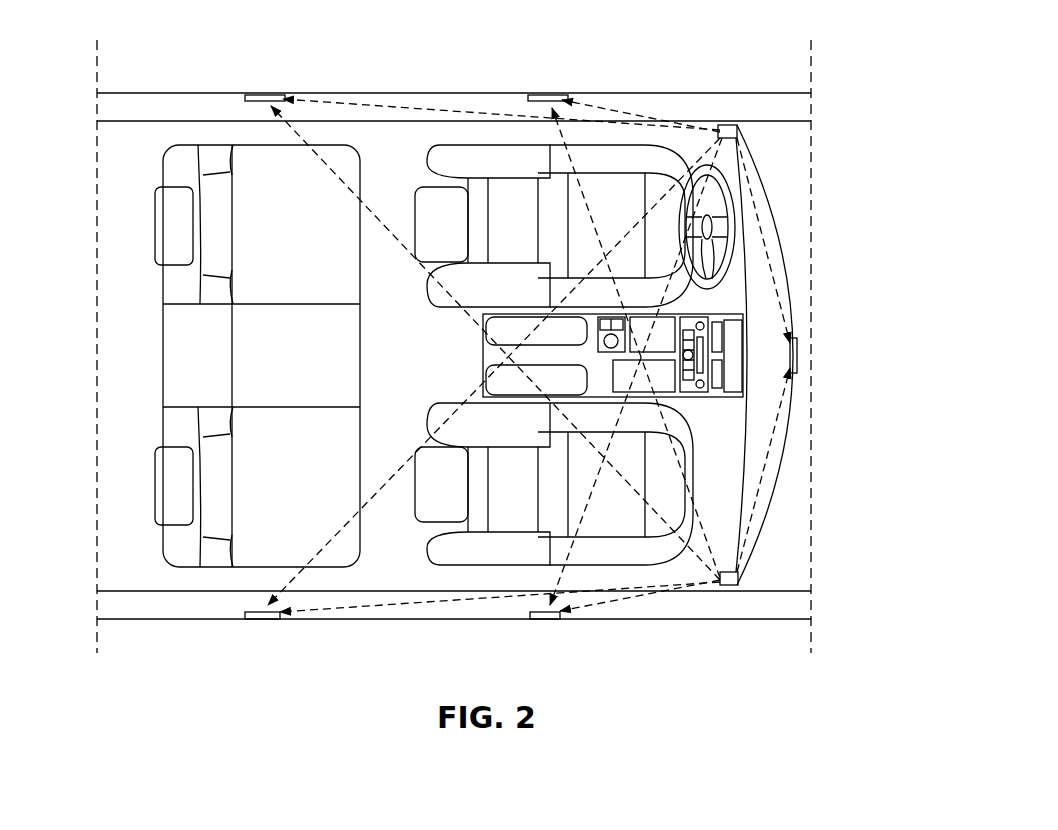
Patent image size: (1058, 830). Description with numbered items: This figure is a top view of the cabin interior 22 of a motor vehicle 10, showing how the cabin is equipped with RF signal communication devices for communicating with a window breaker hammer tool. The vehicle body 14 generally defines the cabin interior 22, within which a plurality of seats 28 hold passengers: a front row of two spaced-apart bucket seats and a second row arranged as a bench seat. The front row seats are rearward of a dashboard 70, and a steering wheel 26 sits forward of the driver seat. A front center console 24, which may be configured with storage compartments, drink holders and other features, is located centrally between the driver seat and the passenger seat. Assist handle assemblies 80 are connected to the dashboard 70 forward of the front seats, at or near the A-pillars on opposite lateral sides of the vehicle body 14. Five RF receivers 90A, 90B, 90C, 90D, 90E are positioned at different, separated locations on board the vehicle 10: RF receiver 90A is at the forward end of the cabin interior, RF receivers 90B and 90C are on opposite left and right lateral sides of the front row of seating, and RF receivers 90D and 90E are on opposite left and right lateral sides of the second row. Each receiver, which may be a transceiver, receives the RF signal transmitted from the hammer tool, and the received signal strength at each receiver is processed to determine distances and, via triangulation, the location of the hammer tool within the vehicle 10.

The motor vehicle 10 is at (828, 80).
The vehicle body 14 is at (682, 620).
The cabin interior 22 is at (392, 170).
The front center console 24 is at (675, 310).
The steering wheel 26 is at (730, 200).
The seats 28 is at (180, 167).
The dashboard 70 is at (746, 464).
The assist handle assemblies 80 is at (718, 123).
The RF receiver 90A is at (798, 358).
The RF receiver 90B is at (548, 95).
The RF receiver 90C is at (542, 619).
The RF receiver 90D is at (265, 95).
The RF receiver 90E is at (257, 619).